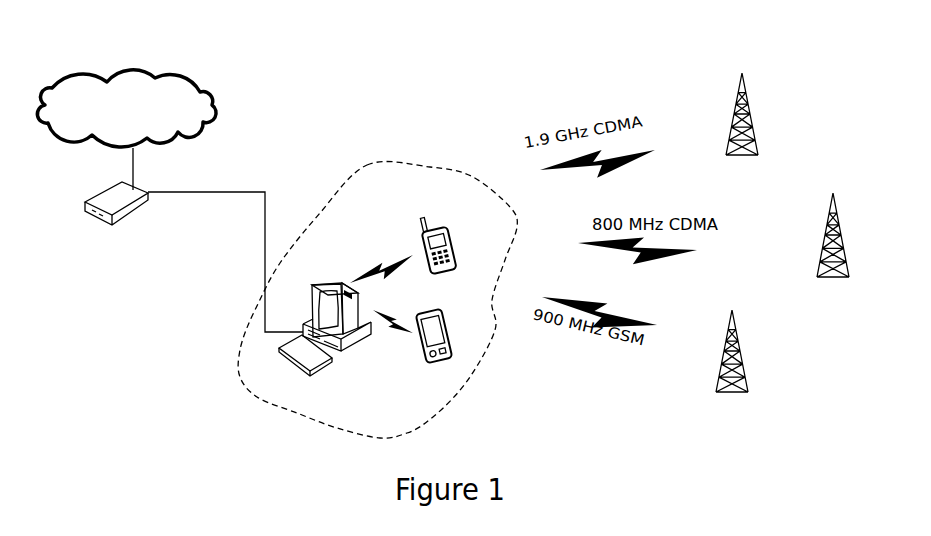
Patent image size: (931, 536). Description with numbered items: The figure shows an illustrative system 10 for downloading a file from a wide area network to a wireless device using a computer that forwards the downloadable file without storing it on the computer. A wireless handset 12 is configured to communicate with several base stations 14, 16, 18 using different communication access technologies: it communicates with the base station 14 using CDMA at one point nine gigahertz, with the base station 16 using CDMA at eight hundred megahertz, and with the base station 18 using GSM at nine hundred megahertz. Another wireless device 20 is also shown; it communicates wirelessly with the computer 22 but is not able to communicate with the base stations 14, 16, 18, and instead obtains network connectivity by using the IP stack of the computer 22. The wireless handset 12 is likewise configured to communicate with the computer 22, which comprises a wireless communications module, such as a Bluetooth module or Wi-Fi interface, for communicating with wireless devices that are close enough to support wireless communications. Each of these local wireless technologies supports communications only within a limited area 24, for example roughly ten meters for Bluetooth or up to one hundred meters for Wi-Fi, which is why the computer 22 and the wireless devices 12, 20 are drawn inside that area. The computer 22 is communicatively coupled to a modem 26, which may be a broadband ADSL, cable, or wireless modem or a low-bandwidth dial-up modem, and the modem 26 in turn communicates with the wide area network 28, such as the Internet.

The system 10 is at (455, 104).
The wireless handset 12 is at (427, 226).
The base station 14 is at (743, 113).
The base station 16 is at (838, 220).
The base station 18 is at (738, 347).
The wireless device 20 is at (444, 322).
The computer 22 is at (334, 365).
The limited area 24 is at (382, 165).
The modem 26 is at (100, 200).
The wide area network 28 is at (123, 72).